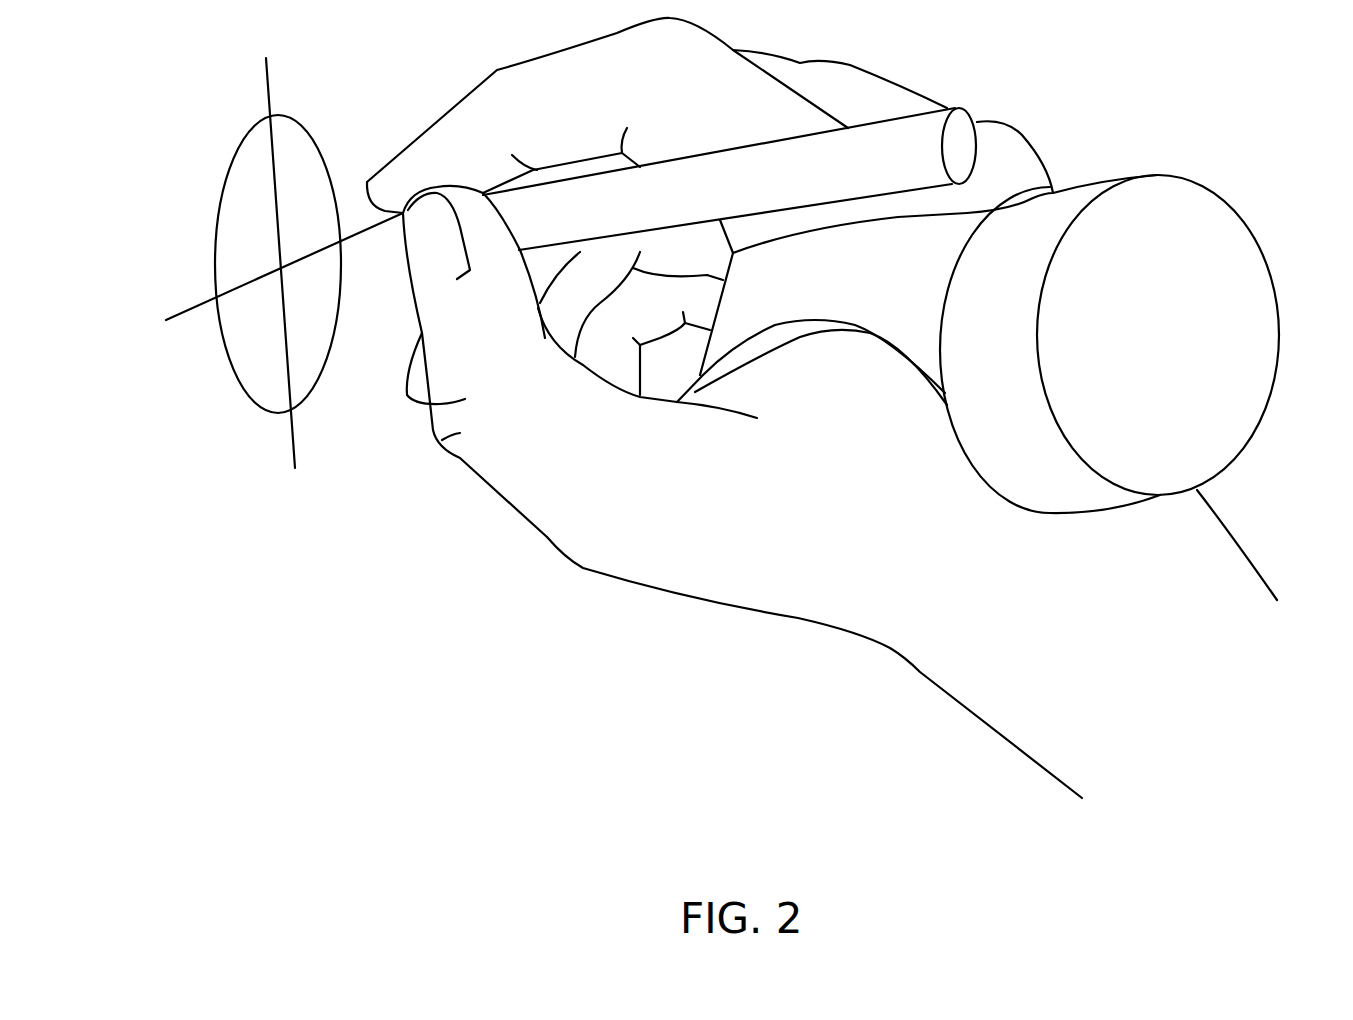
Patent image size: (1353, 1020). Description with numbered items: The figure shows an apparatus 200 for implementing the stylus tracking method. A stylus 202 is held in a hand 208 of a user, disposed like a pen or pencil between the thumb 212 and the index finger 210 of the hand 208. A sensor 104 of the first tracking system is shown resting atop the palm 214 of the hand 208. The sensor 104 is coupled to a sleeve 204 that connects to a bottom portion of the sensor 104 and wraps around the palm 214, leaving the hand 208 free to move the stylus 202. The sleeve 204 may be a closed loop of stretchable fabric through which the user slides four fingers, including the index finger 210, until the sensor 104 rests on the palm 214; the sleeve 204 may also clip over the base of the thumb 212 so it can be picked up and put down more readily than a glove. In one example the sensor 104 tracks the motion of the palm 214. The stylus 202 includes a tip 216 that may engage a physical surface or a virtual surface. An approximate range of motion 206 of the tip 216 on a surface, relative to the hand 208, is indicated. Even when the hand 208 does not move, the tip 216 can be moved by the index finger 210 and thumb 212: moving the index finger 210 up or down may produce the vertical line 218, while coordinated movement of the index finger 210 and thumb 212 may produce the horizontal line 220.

The sensor 104 is at (1158, 305).
The apparatus 200 is at (768, 877).
The stylus 202 is at (925, 108).
The sleeve 204 is at (813, 280).
The approximate range of motion 206 is at (227, 187).
The hand 208 is at (690, 600).
The index finger 210 is at (473, 118).
The thumb 212 is at (477, 387).
The palm 214 is at (683, 402).
The tip 216 is at (238, 364).
The vertical line 218 is at (293, 437).
The horizontal line 220 is at (183, 307).